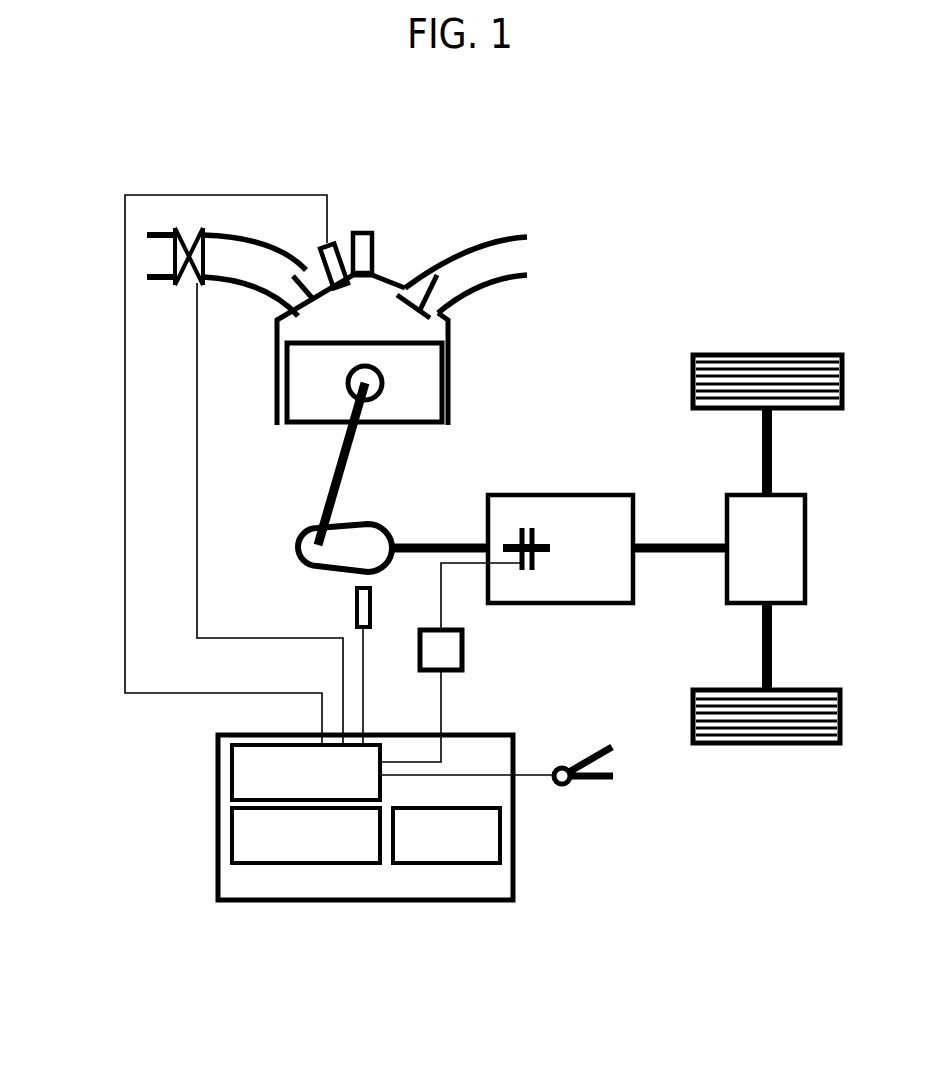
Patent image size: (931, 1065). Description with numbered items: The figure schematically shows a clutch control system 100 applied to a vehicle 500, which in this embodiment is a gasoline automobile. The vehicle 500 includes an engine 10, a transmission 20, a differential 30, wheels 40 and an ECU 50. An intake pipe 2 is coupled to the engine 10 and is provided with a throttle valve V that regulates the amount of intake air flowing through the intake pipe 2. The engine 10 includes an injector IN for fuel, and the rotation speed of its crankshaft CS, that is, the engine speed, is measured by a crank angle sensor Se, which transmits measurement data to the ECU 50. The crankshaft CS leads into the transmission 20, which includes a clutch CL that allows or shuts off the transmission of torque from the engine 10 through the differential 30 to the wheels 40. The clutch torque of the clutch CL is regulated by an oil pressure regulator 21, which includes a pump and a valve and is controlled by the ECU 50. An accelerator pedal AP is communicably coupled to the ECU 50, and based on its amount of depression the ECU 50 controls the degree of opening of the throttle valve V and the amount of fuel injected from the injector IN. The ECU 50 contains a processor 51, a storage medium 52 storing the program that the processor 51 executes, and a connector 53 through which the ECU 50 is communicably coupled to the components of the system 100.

The vehicle 500 is at (104, 160).
The engine 10 is at (431, 238).
The intake pipe 2 is at (227, 235).
The throttle valve V is at (174, 284).
The injector IN is at (317, 263).
The crankshaft CS is at (388, 530).
The transmission 20 is at (540, 495).
The clutch CL is at (537, 532).
The differential 30 is at (736, 495).
The wheels 40 is at (748, 355).
The crank angle sensor Se is at (357, 606).
The oil pressure regulator 21 is at (462, 648).
The accelerator pedal AP is at (588, 755).
The ECU 50 is at (248, 900).
The connector 53 is at (232, 777).
The processor 51 is at (232, 840).
The storage medium 52 is at (500, 838).
The clutch control system 100 is at (634, 817).